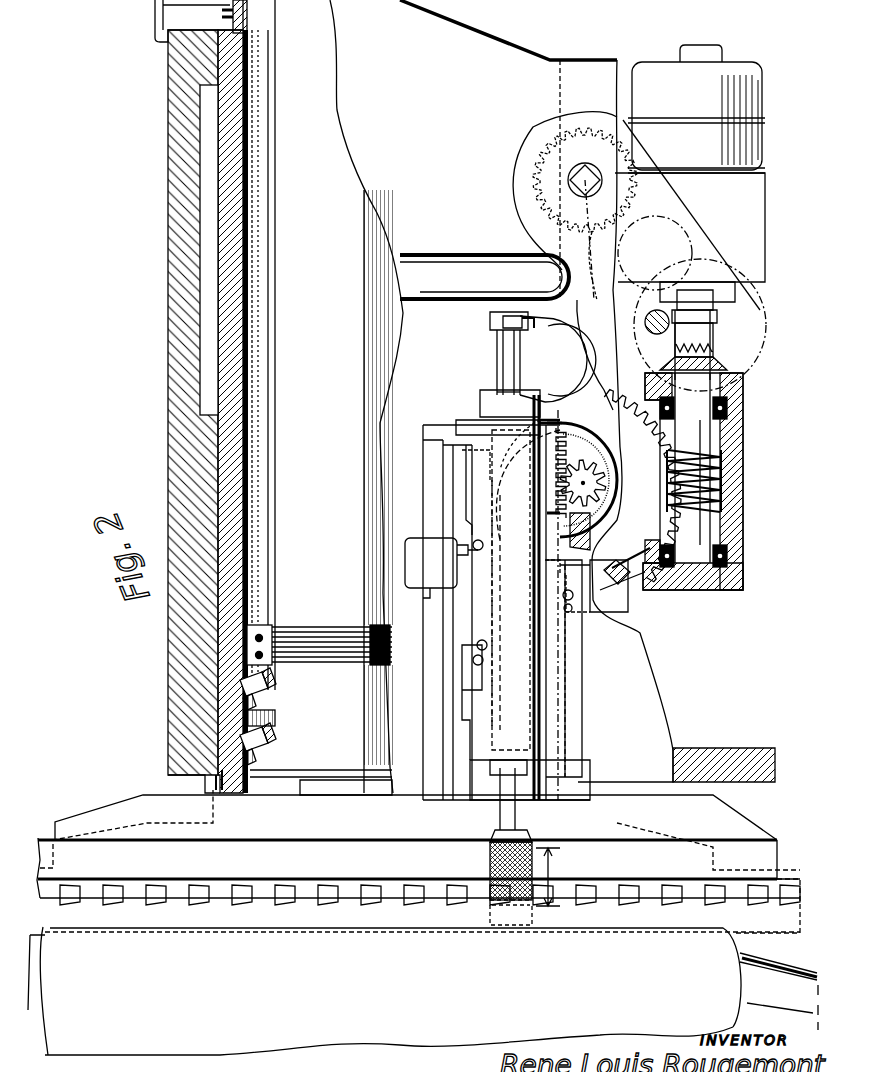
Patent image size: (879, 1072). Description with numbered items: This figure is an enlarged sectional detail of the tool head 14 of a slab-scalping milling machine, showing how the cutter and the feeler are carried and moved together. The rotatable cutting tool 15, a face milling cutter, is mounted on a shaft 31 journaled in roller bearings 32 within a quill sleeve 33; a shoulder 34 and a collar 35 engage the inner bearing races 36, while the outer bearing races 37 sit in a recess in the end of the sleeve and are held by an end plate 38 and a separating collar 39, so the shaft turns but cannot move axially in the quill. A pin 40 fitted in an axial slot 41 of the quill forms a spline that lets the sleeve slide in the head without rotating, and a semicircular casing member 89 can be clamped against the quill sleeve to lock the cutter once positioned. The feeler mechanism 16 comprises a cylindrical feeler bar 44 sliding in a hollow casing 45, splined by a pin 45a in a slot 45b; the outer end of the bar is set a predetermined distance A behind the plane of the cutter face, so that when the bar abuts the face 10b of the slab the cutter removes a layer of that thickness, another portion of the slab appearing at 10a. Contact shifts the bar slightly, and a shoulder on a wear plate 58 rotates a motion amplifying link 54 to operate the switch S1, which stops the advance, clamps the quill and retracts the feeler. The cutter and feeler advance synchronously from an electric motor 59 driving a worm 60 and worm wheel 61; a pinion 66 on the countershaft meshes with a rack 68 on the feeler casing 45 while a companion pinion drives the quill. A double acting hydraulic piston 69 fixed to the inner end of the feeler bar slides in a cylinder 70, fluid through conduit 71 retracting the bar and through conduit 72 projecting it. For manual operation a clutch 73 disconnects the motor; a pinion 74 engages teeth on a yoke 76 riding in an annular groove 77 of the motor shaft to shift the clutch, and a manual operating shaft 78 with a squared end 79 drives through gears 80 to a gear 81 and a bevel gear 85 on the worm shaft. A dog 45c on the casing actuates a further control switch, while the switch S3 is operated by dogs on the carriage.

The work piece end portion 10a is at (745, 942).
The face of the slab 10b is at (440, 930).
The tool head 14 is at (743, 782).
The cutting tool 15 is at (782, 848).
The feeler mechanism 16 is at (458, 704).
The shaft 31 is at (270, 420).
The roller bearings 32 is at (270, 690).
The quill sleeve 33 is at (258, 295).
The shoulder 34 is at (318, 778).
The collar 35 is at (260, 632).
The inner bearing races 36 is at (276, 680).
The outer bearing races 37 is at (240, 740).
The end plate 38 is at (214, 790).
The separating collar 39 is at (262, 718).
The pin 40 is at (156, 30).
The axial slot 41 is at (246, 26).
The feeler bar 44 is at (506, 842).
The casing 45 is at (488, 758).
The pin 45a is at (472, 490).
The slot 45b is at (528, 480).
The dog 45c is at (565, 690).
The motion amplifying link 54 is at (500, 558).
The wear plate 58 is at (498, 662).
The electric motor 59 is at (660, 72).
The worm 60 is at (708, 505).
The worm wheel 61 is at (636, 580).
The pinion 66 is at (600, 482).
The rack 68 is at (572, 432).
The hydraulic piston 69 is at (503, 375).
The cylinder 70 is at (498, 346).
The conduit 71 is at (578, 355).
The conduit 72 is at (543, 310).
The clutch 73 is at (718, 330).
The pinion 74 is at (645, 322).
The yoke 76 is at (682, 342).
The annular groove 77 is at (714, 312).
The manual operating shaft 78 is at (585, 192).
The squared end 79 is at (588, 168).
The gears 80 is at (590, 222).
The gear 81 is at (700, 325).
The bevel gear 85 is at (662, 362).
The semicircular casing member 89 is at (176, 250).
The switch S1 is at (414, 538).
The switch S3 is at (606, 605).
The predetermined distance A is at (550, 877).